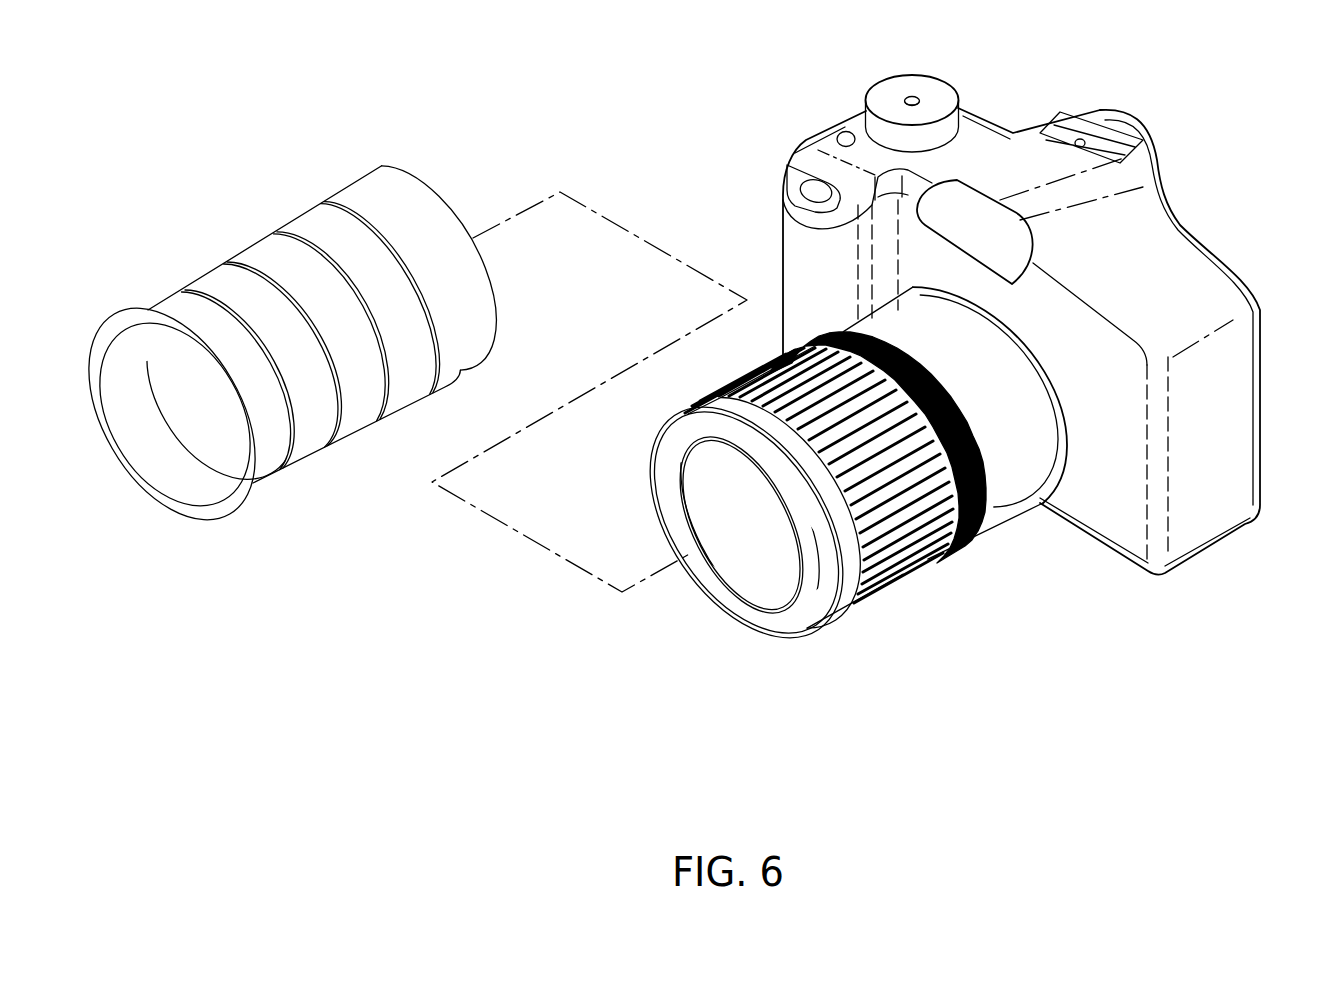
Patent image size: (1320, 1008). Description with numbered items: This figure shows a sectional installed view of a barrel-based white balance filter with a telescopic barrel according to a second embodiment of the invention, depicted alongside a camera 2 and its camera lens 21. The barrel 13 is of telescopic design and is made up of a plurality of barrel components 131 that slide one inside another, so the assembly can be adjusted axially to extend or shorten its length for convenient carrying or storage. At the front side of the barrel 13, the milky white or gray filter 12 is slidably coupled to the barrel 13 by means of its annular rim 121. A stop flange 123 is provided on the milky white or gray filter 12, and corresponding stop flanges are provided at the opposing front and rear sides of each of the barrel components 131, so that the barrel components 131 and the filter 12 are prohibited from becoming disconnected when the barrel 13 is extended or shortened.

The camera 2 is at (1190, 272).
The camera lens 21 is at (880, 570).
The milky white or gray filter 12 is at (199, 424).
The annular rim 121 is at (166, 306).
The stop flange 123 is at (222, 512).
The barrel 13 is at (408, 136).
The barrel components 131 is at (208, 287).